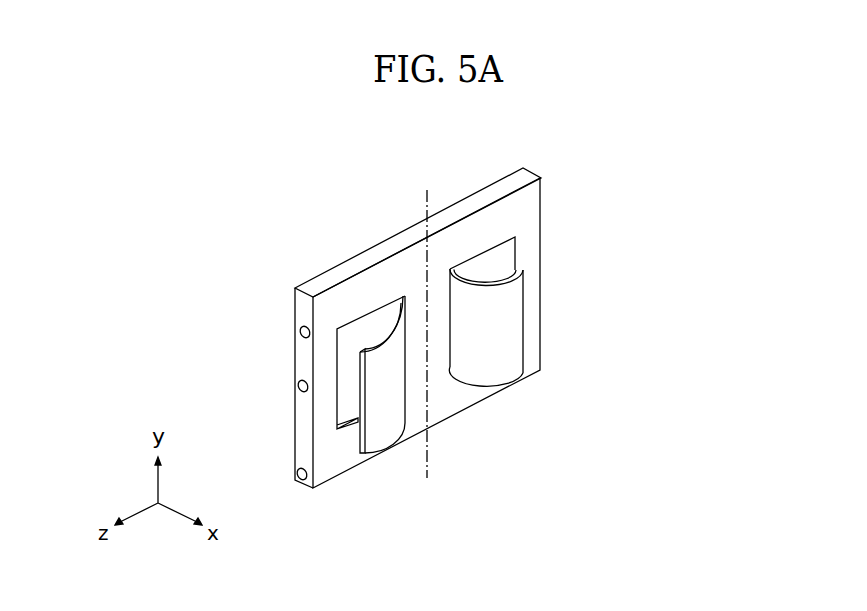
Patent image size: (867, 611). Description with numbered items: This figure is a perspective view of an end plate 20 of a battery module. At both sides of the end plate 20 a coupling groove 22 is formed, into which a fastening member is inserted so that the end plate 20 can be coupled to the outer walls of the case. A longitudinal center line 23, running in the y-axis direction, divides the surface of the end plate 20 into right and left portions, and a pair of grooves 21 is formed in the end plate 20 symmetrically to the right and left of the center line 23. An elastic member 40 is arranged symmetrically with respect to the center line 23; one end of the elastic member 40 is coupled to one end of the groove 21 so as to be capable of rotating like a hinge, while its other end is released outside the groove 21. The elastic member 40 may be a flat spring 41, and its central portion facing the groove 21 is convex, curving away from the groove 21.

The end plate 20 is at (347, 254).
The groove 21 is at (348, 403).
The coupling groove 22 is at (300, 332).
The center line 23 is at (427, 455).
The elastic member 40 is at (363, 457).
The flat spring 41 is at (505, 367).